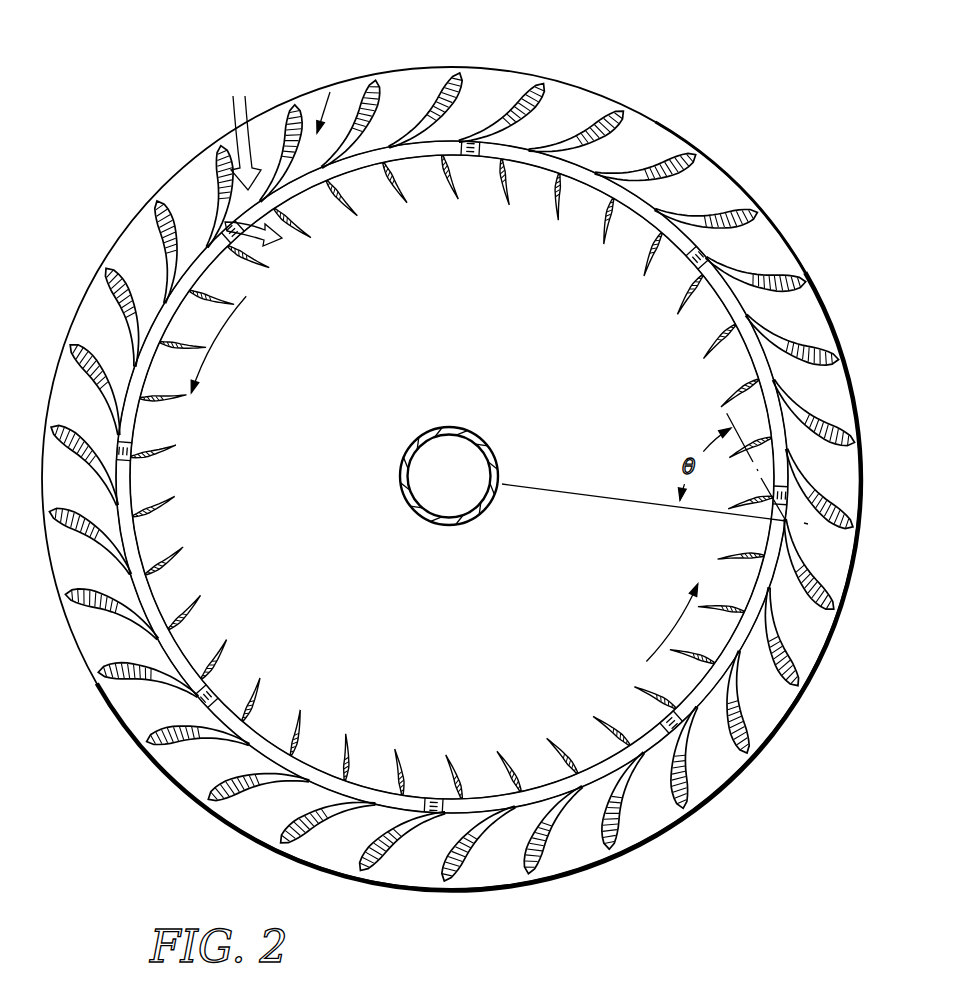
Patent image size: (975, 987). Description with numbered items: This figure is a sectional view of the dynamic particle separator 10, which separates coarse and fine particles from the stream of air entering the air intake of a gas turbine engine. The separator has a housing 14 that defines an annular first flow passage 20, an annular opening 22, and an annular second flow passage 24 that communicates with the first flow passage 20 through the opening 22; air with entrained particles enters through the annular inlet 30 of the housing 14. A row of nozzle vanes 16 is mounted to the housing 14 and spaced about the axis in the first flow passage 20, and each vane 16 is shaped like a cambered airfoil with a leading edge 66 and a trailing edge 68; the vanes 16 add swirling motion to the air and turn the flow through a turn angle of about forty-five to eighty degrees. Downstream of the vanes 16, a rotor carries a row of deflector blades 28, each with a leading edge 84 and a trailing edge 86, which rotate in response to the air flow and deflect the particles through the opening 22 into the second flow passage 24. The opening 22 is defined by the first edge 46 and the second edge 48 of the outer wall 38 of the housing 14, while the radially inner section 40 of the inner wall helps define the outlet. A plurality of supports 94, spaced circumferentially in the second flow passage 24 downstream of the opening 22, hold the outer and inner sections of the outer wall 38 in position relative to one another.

The dynamic particle separator 10 is at (658, 88).
The housing 14 is at (670, 127).
The nozzle vanes 16 is at (458, 80).
The first flow passage 20 is at (128, 238).
The opening 22 is at (390, 206).
The second flow passage 24 is at (420, 160).
The deflector blades 28 is at (558, 210).
The inlet 30 is at (396, 72).
The outer wall 38 is at (732, 173).
The radially inner section 40 is at (495, 472).
The first edge 46 is at (535, 163).
The second edge 48 is at (570, 168).
The leading edge 66 is at (210, 142).
The trailing edge 68 is at (180, 185).
The leading edge 84 is at (197, 285).
The trailing edge 86 is at (255, 262).
The supports 94 is at (468, 158).